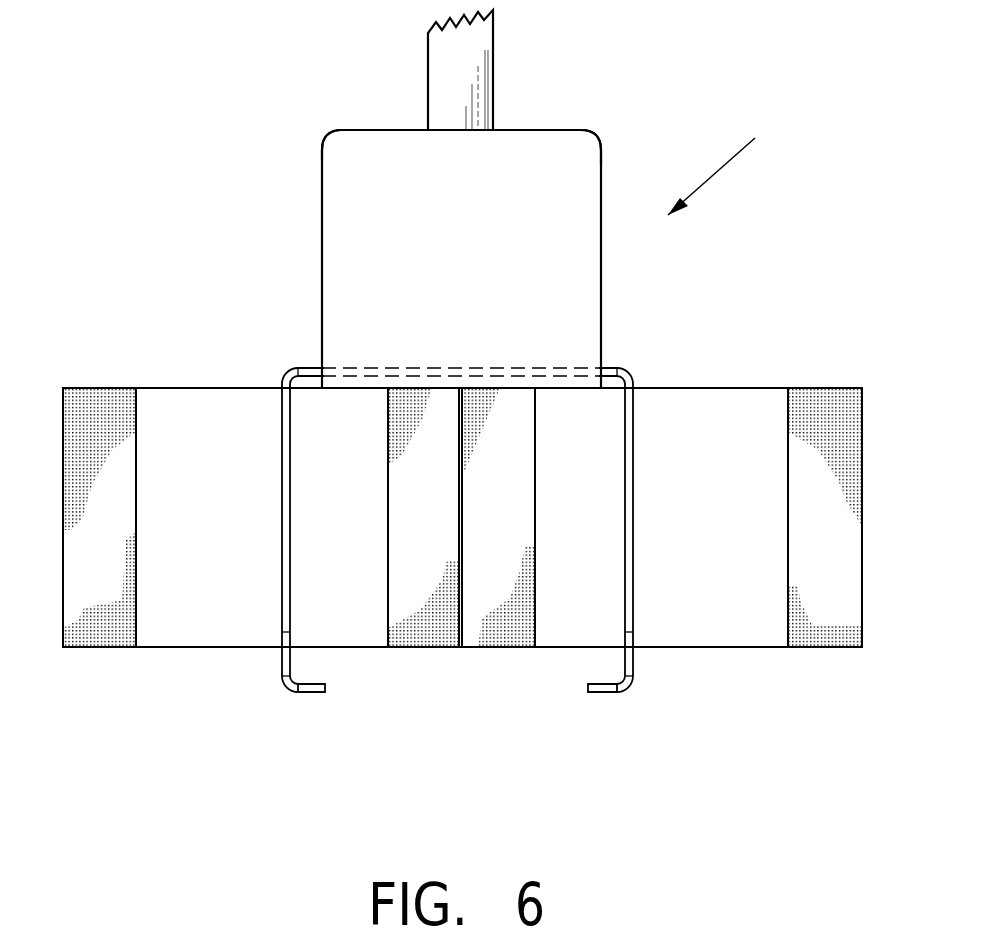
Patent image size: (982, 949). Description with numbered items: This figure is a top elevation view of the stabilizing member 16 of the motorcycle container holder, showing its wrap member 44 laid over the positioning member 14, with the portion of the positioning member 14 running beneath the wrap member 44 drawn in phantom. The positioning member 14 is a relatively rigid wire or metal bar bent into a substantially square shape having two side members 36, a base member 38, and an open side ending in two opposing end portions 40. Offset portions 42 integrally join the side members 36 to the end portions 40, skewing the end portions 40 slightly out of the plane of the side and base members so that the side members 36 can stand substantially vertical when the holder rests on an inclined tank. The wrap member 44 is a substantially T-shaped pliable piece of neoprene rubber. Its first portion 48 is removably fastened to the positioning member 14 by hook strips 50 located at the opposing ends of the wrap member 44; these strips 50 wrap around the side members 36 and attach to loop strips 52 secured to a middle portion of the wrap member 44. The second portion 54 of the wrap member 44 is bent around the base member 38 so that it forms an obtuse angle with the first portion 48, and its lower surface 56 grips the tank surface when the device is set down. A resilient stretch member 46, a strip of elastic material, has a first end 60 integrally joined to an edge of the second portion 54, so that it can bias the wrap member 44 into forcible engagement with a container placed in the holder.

The positioning member 14 is at (444, 518).
The stabilizing member 16 is at (726, 166).
The side members 36 is at (285, 552).
The base member 38 is at (305, 366).
The end portions 40 is at (318, 690).
The offset portions 42 is at (282, 658).
The wrap member 44 is at (342, 150).
The stretch member 46 is at (450, 50).
The first portion 48 is at (702, 443).
The hook VELCRO strips 50 is at (113, 406).
The loop VELCRO strips 52 is at (408, 513).
The second portion 54 is at (595, 140).
The lower surface 56 is at (372, 217).
The first end 60 is at (452, 128).